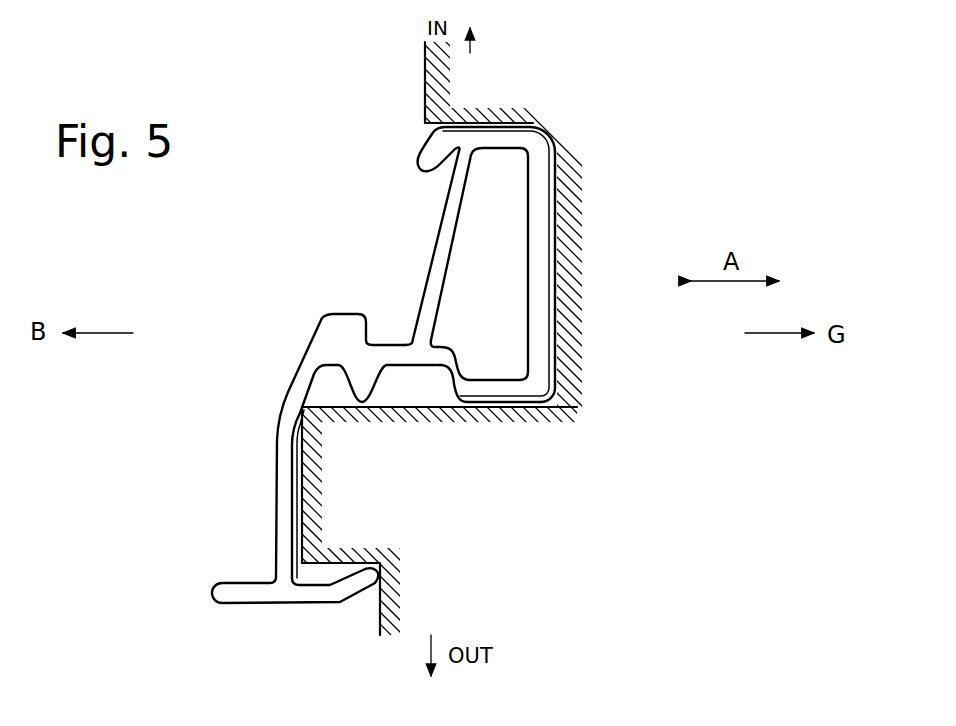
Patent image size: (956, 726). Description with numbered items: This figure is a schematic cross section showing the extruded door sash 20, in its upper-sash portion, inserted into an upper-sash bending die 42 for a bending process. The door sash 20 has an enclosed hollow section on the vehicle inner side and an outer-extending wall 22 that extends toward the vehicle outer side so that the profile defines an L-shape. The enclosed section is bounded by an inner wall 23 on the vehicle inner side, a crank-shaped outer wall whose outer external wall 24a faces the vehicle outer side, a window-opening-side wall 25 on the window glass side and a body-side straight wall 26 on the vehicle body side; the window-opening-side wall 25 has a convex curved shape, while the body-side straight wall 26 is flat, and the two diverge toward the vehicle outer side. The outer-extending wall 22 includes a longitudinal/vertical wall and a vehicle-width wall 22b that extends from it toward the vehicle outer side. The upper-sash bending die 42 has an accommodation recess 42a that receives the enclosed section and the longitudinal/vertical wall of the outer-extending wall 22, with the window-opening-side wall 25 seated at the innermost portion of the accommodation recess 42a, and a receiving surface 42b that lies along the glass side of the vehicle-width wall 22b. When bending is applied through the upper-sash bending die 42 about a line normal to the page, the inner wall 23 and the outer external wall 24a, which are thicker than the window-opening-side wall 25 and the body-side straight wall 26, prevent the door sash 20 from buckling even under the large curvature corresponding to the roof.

The door sash 20 is at (338, 286).
The outer-extending wall 22 is at (358, 353).
The vehicle-width wall 22b is at (277, 510).
The inner wall 23 is at (503, 142).
The outer external wall 24a is at (508, 392).
The window-opening-side wall 25 is at (540, 262).
The body-side straight wall 26 is at (445, 238).
The upper-sash bending die 42 is at (333, 454).
The accommodation recess 42a is at (563, 321).
The receiving surface 42b is at (302, 479).